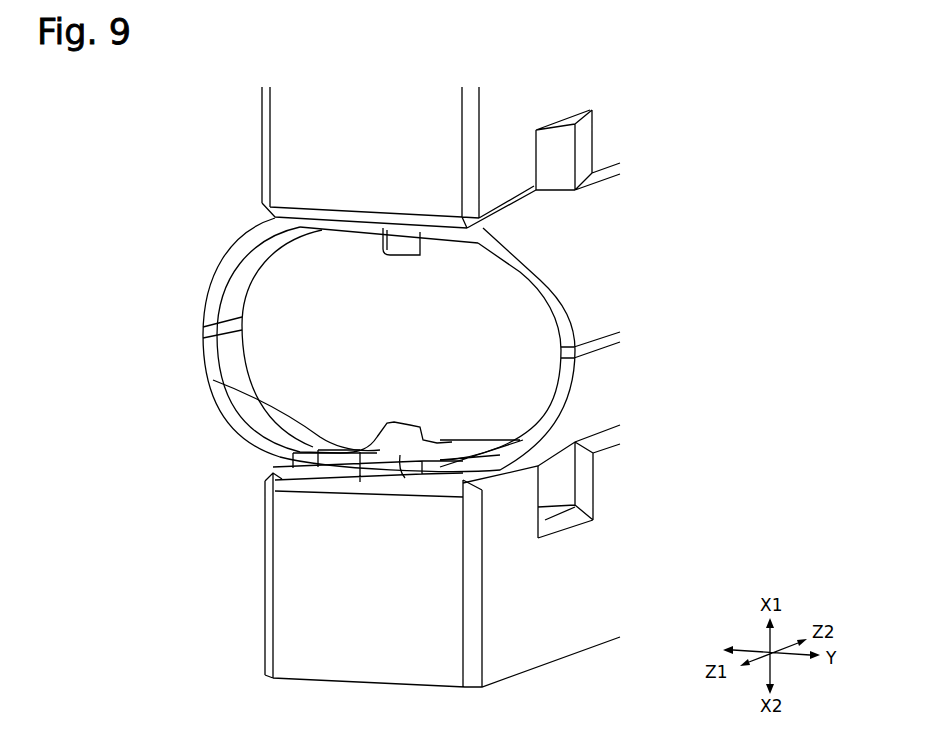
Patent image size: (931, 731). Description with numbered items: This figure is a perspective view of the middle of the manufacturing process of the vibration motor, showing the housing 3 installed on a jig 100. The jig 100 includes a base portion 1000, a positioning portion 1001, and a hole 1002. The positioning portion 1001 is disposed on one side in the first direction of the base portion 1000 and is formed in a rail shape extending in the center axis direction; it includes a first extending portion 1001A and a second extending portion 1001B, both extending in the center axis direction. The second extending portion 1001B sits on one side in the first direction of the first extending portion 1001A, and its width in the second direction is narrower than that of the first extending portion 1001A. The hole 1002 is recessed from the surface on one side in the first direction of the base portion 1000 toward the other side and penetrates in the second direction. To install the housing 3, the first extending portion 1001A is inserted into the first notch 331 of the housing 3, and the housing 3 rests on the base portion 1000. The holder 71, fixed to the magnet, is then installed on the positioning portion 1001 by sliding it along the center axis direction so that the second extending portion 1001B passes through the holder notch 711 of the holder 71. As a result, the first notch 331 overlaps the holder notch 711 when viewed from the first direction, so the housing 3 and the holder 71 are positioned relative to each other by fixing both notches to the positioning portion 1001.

The housing 3 is at (603, 383).
The holder 71 is at (522, 287).
The holder notch 711 is at (385, 421).
The jig 100 is at (608, 583).
The first notch 331 is at (402, 457).
The base portion 1000 is at (305, 664).
The positioning portion 1001 is at (269, 478).
The first extending portion 1001A is at (273, 493).
The second extending portion 1001B is at (377, 434).
The hole 1002 is at (560, 480).